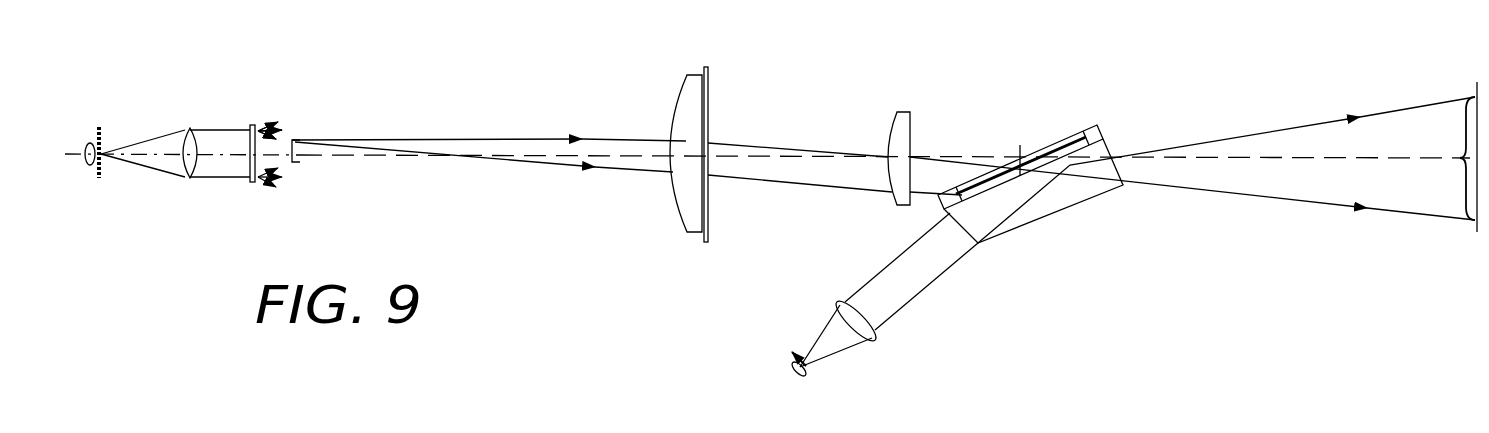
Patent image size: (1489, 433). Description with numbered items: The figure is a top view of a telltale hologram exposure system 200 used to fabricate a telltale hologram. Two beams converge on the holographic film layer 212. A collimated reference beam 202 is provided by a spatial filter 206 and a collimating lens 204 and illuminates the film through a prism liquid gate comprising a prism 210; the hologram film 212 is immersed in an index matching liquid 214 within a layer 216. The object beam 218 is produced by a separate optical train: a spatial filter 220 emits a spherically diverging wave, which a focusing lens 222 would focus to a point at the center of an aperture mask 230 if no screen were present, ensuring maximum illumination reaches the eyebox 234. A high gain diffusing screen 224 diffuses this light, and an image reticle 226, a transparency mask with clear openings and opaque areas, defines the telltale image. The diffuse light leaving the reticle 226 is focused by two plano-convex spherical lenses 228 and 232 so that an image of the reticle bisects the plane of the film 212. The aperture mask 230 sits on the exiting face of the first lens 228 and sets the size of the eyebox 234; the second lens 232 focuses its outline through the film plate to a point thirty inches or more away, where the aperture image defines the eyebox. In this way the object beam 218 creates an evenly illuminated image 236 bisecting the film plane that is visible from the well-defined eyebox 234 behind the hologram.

The telltale hologram exposure system 200 is at (556, 125).
The collimated reference beam 202 is at (933, 277).
The collimating lens 204 is at (868, 343).
The spatial filter 206 is at (810, 372).
The prism 210 is at (1052, 217).
The holographic film layer 212 is at (1080, 145).
The index matching liquid 214 is at (1100, 140).
The layer 216 is at (945, 205).
The object beam 218 is at (470, 160).
The spatial filter 220 is at (100, 178).
The focusing lens 222 is at (192, 128).
The high gain diffusing screen 224 is at (255, 125).
The image reticle 226 is at (295, 163).
The first plano-convex spherical lens 228 is at (686, 88).
The aperture mask 230 is at (710, 88).
The second plano-convex spherical lens 232 is at (896, 118).
The eyebox 234 is at (1437, 157).
The image 236 is at (1019, 150).